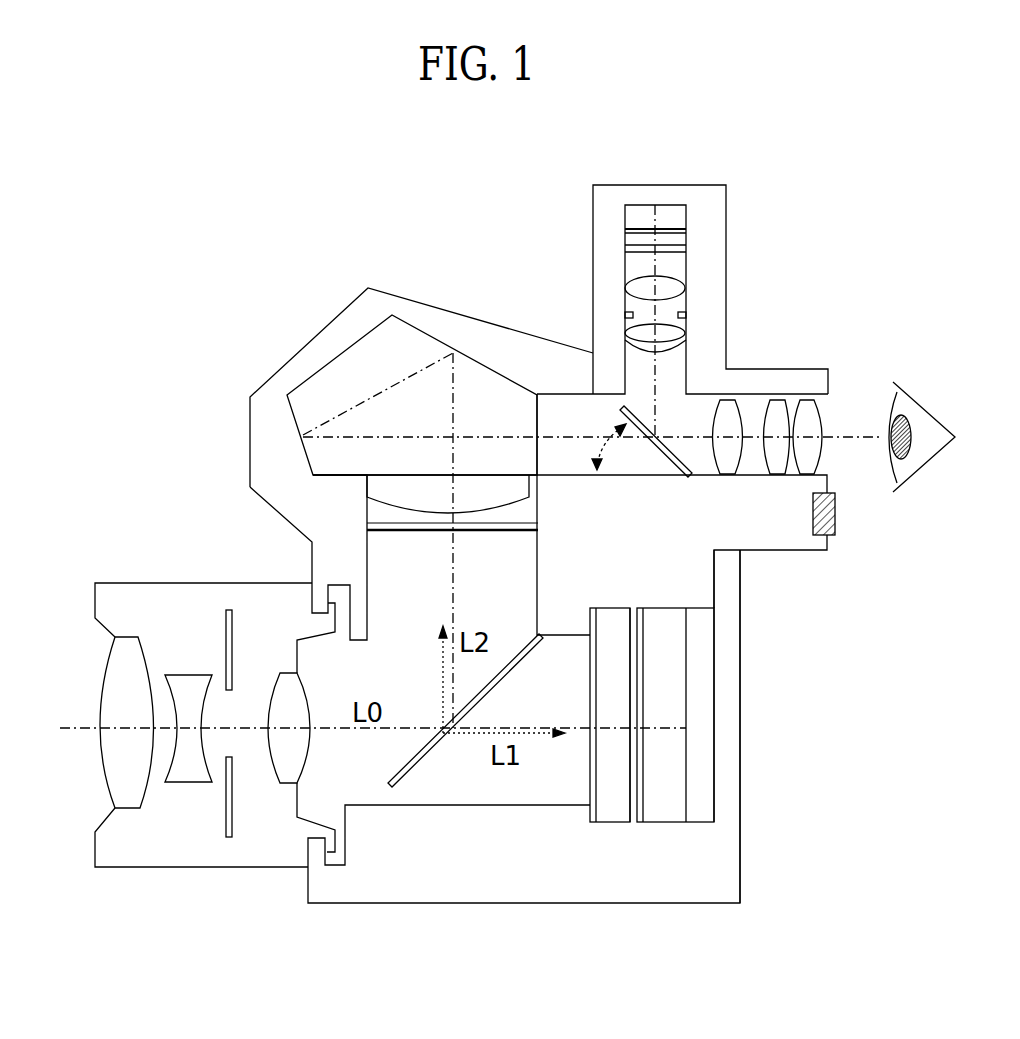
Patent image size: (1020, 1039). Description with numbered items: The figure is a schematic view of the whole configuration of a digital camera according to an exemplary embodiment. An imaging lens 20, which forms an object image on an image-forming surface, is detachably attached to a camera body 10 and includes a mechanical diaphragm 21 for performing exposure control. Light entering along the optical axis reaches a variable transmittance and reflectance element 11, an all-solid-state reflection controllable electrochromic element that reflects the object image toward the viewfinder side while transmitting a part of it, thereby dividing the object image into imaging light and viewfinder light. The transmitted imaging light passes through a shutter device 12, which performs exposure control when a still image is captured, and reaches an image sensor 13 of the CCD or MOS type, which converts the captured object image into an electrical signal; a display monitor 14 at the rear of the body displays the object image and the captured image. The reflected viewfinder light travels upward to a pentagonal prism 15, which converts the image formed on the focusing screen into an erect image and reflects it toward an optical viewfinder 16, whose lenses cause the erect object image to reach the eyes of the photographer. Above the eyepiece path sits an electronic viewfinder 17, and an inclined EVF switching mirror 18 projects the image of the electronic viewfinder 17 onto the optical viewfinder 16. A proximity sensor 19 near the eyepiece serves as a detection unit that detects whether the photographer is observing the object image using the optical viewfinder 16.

The camera body 10 is at (507, 890).
The variable transmittance and reflectance element 11 is at (413, 772).
The shutter device 12 is at (612, 810).
The image sensor 13 is at (663, 810).
The display monitor 14 is at (741, 700).
The pentagonal prism 15 is at (358, 367).
The optical viewfinder 16 is at (757, 410).
The electronic viewfinder 17 is at (637, 265).
The EVF switching mirror 18 is at (670, 463).
The proximity sensor 19 is at (837, 522).
The imaging lens 20 is at (150, 853).
The mechanical diaphragm 21 is at (230, 838).